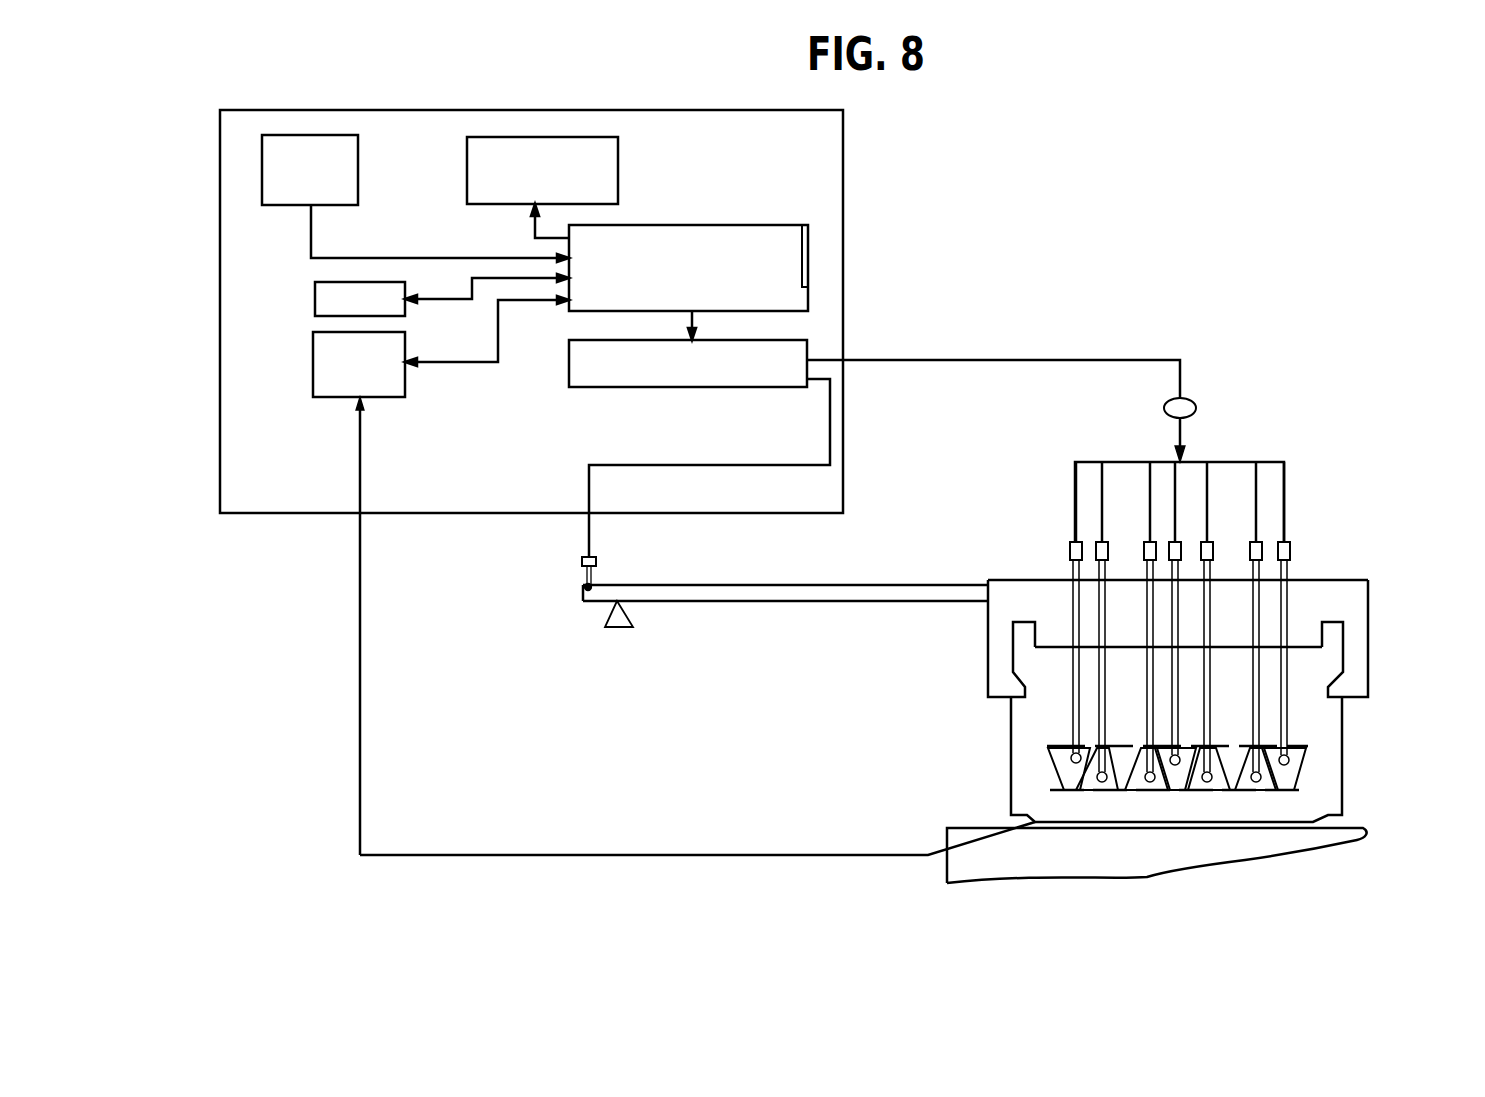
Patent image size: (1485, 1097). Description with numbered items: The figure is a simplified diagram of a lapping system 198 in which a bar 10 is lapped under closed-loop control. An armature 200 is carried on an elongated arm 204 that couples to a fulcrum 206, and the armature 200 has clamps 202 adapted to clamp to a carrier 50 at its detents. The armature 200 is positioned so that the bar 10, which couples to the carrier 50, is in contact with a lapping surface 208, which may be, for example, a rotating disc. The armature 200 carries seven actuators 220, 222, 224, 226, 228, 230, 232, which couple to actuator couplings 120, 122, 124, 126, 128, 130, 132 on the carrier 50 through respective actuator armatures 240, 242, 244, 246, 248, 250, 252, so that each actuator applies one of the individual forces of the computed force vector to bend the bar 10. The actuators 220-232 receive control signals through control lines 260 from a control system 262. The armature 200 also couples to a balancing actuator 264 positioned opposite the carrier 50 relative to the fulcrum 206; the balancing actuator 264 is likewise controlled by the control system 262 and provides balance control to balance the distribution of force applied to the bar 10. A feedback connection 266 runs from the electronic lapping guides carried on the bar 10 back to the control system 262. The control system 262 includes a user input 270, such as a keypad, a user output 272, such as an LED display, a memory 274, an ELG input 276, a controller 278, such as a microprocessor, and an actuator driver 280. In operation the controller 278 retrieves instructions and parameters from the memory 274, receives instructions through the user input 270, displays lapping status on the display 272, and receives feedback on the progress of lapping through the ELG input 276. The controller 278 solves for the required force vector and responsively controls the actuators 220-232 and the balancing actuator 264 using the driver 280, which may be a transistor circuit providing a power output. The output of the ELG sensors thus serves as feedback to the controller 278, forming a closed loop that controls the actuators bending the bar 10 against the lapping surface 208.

The lapping system 198 is at (1035, 185).
The control system 262 is at (215, 222).
The user input 270 is at (315, 135).
The user output 272 is at (552, 137).
The memory 274 is at (318, 315).
The ELG input 276 is at (318, 355).
The controller 278 is at (770, 228).
The driver 280 is at (800, 342).
The control lines 260 is at (1197, 405).
The balancing actuator 264 is at (582, 562).
The elongated arm 204 is at (762, 590).
The fulcrum 206 is at (607, 625).
The feedback connection 266 is at (358, 605).
The actuator 220 is at (1070, 556).
The actuator 222 is at (1095, 545).
The actuator 224 is at (1147, 542).
The actuator 226 is at (1180, 545).
The actuator 228 is at (1213, 545).
The actuator 230 is at (1262, 547).
The actuator 232 is at (1290, 552).
The armature 200 is at (1378, 580).
The actuator armature 240 is at (1077, 588).
The actuator armature 242 is at (1098, 613).
The actuator armature 244 is at (1150, 690).
The actuator armature 246 is at (1172, 712).
The actuator armature 248 is at (1217, 745).
The actuator armature 250 is at (1257, 593).
The actuator armature 252 is at (1287, 690).
The clamps 202 is at (988, 682).
The carrier 50 is at (1357, 735).
The actuator coupling 122 is at (1030, 815).
The actuator coupling 130 is at (1282, 797).
The actuator coupling 120 is at (1072, 772).
The actuator coupling 124 is at (1147, 793).
The actuator coupling 126 is at (1172, 793).
The actuator coupling 128 is at (1207, 793).
The actuator coupling 132 is at (1290, 775).
The bar 10 is at (1363, 833).
The lapping surface 208 is at (1052, 870).